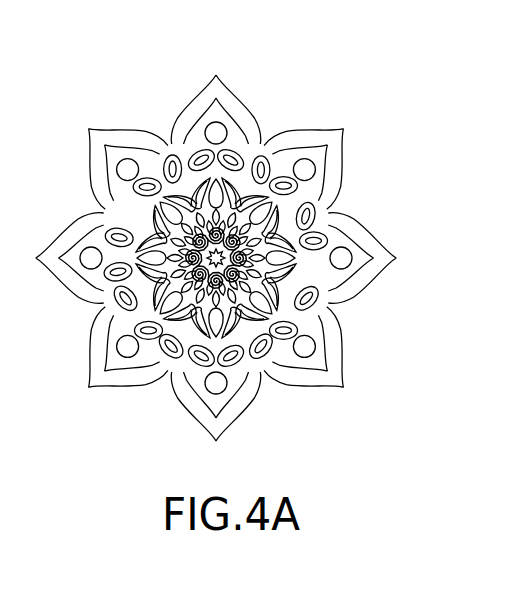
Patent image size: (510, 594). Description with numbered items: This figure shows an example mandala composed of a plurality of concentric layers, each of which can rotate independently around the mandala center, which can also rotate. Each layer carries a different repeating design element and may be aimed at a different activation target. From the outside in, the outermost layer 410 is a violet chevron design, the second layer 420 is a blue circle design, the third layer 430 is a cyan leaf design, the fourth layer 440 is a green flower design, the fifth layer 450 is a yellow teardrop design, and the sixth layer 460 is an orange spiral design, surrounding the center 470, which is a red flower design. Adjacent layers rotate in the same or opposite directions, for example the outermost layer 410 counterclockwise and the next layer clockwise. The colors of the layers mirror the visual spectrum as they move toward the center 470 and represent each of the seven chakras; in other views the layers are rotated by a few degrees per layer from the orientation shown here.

The outermost layer 410 is at (207, 103).
The second layer 420 is at (217, 124).
The third layer 430 is at (268, 167).
The fourth layer 440 is at (258, 297).
The fifth layer 450 is at (198, 296).
The sixth layer 460 is at (181, 273).
The center 470 is at (209, 248).